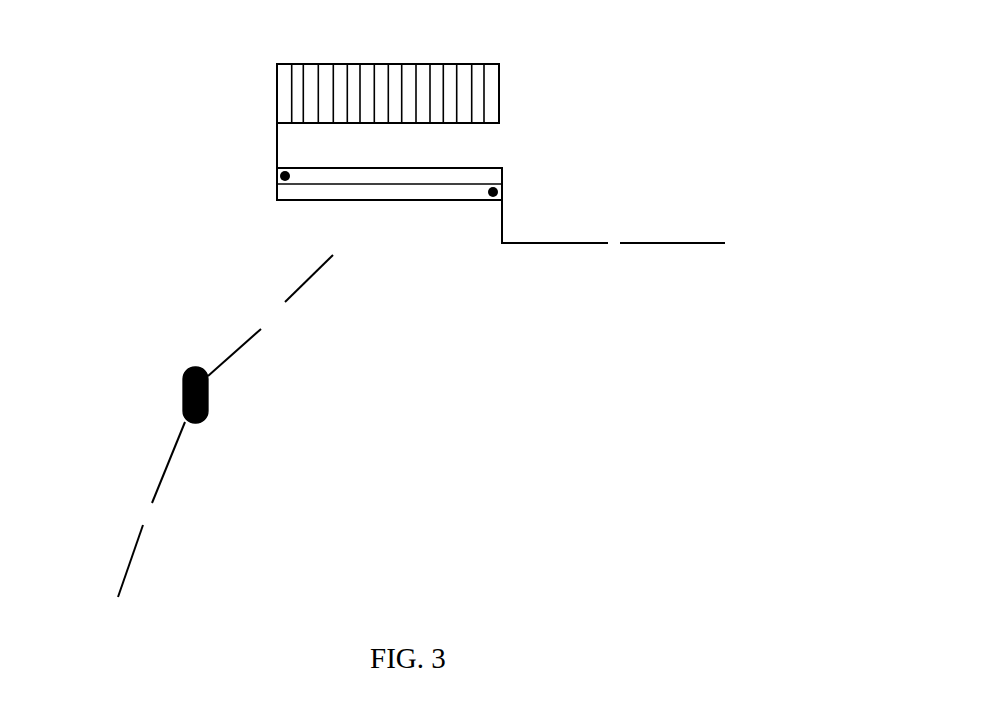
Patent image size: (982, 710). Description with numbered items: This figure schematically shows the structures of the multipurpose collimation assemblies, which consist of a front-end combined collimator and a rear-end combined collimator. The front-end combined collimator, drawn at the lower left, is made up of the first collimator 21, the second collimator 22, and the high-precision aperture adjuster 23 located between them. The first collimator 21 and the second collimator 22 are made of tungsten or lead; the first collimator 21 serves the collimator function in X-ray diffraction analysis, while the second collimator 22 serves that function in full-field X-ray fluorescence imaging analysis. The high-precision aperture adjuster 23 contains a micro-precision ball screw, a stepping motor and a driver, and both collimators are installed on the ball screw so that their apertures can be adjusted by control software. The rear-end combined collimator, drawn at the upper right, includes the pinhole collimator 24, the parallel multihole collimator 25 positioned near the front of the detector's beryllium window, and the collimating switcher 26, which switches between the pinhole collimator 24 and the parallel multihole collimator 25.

The first collimator 21 is at (132, 550).
The second collimator 22 is at (300, 280).
The high-precision aperture adjuster 23 is at (182, 379).
The pinhole collimator 24 is at (674, 245).
The parallel multihole collimator 25 is at (503, 85).
The collimating switcher 26 is at (276, 186).